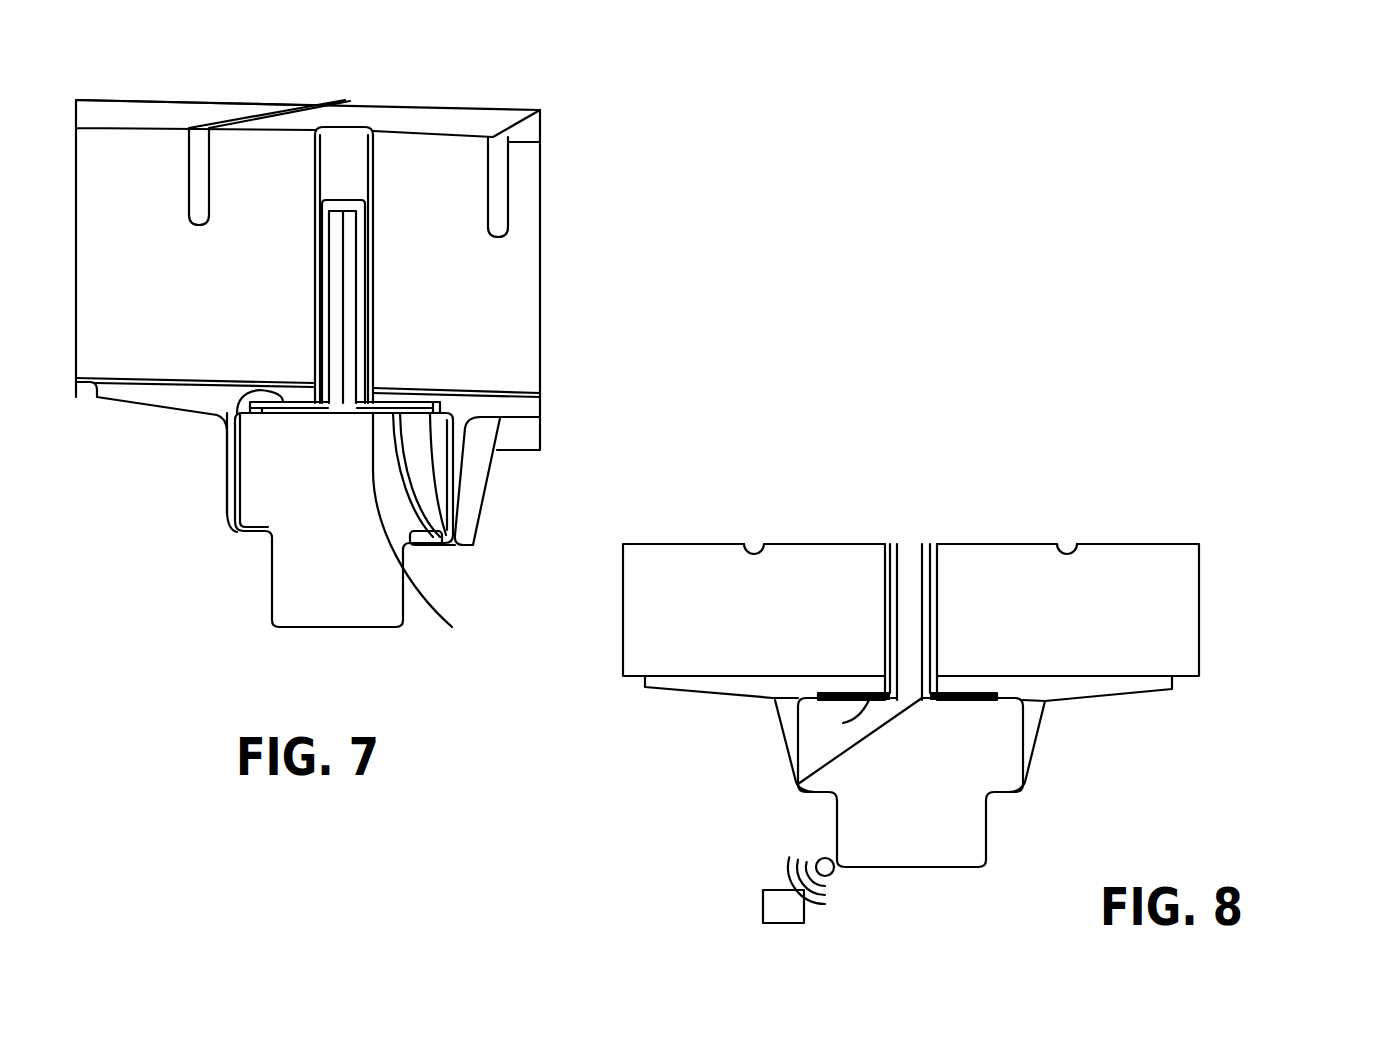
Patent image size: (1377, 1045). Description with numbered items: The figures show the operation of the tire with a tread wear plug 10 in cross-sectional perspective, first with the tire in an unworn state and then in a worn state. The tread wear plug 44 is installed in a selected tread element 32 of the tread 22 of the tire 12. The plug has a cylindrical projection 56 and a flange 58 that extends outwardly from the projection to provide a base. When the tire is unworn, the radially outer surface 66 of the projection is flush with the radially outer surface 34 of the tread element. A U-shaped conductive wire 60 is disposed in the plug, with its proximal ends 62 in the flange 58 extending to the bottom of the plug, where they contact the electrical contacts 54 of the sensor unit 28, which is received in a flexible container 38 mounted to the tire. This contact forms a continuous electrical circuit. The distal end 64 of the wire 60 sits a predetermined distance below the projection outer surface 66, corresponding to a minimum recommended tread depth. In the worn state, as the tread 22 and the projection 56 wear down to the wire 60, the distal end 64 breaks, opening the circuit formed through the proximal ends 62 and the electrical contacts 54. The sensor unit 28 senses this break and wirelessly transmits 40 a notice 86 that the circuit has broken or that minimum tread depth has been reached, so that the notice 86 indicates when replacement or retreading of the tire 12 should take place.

In FIG. 7, the tire with a tread wear plug 10 is at (615, 164).
In FIG. 8, the tire with a tread wear plug 10 is at (1130, 457).
In FIG. 7, the tire 12 is at (530, 98).
In FIG. 8, the tire 12 is at (1146, 535).
In FIG. 7, the tread 22 is at (168, 98).
In FIG. 8, the tread 22 is at (688, 544).
In FIG. 7, the sensor unit 28 is at (262, 624).
In FIG. 8, the sensor unit 28 is at (920, 872).
In FIG. 7, the tread element 32 is at (450, 140).
In FIG. 8, the tread element 32 is at (993, 560).
In FIG. 7, the radially outer surface 34 is at (243, 128).
In FIG. 8, the radially outer surface 34 is at (795, 545).
In FIG. 7, the container 38 is at (468, 428).
In FIG. 8, the container 38 is at (1047, 705).
In FIG. 8, the wireless transmission 40 is at (787, 870).
In FIG. 7, the tread wear plug 44 is at (385, 276).
In FIG. 8, the tread wear plug 44 is at (878, 593).
In FIG. 7, the electrical contacts 54 is at (227, 437).
In FIG. 7, the cylindrical projection 56 is at (355, 163).
In FIG. 8, the cylindrical projection 56 is at (883, 630).
In FIG. 7, the flange 58 is at (443, 460).
In FIG. 8, the flange 58 is at (998, 700).
In FIG. 7, the conductive wire 60 is at (373, 317).
In FIG. 8, the conductive wire 60 is at (930, 600).
In FIG. 7, the proximal ends 62 is at (237, 400).
In FIG. 8, the proximal ends 62 is at (870, 698).
In FIG. 7, the distal end 64 is at (357, 197).
In FIG. 7, the radially outer surface 66 is at (350, 128).
In FIG. 8, the notice 86 is at (783, 906).